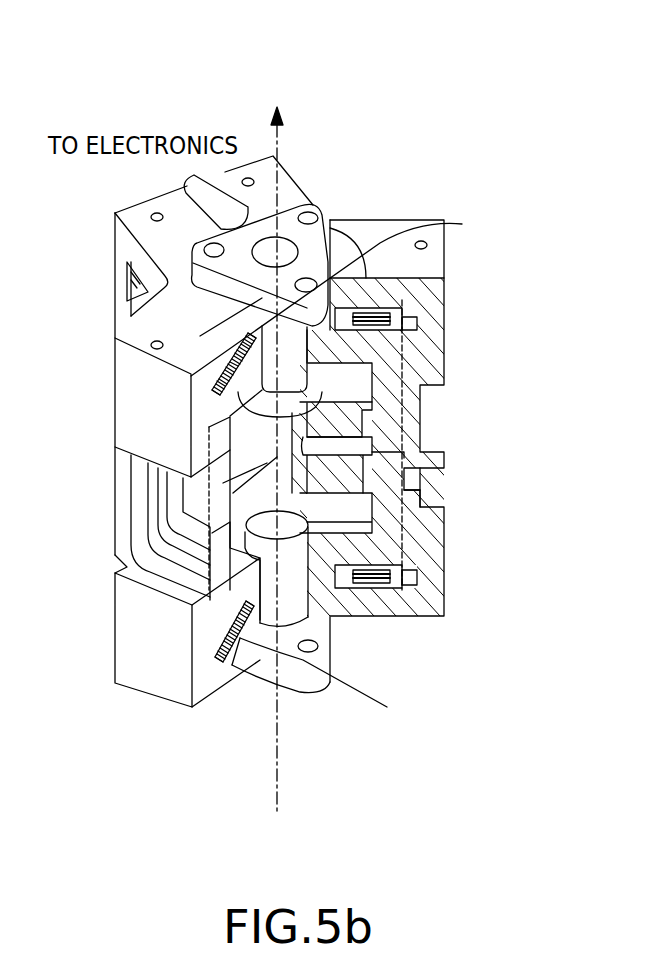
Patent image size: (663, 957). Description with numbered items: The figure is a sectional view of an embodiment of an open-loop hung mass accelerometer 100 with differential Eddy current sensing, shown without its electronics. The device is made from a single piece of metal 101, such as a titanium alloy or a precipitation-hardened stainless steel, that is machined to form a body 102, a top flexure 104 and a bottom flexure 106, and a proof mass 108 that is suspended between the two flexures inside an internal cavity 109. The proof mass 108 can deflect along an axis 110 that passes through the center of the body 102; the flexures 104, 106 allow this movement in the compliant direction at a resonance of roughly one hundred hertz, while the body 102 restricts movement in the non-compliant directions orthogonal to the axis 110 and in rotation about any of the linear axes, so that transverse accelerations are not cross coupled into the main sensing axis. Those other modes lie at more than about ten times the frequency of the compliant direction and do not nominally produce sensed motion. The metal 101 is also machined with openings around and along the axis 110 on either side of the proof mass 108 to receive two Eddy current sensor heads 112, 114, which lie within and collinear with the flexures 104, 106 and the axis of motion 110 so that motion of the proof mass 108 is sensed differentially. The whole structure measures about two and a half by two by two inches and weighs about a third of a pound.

The open-loop hung mass accelerometer 100 is at (157, 82).
The single piece of metal 101 is at (76, 185).
The body 102 is at (372, 219).
The top flexure 104 is at (378, 318).
The bottom flexure 106 is at (372, 614).
The proof mass 108 is at (363, 430).
The internal cavity 109 is at (444, 470).
The axis 110 is at (281, 146).
The Eddy current sensor head 112 is at (300, 395).
The Eddy current sensor head 114 is at (300, 522).